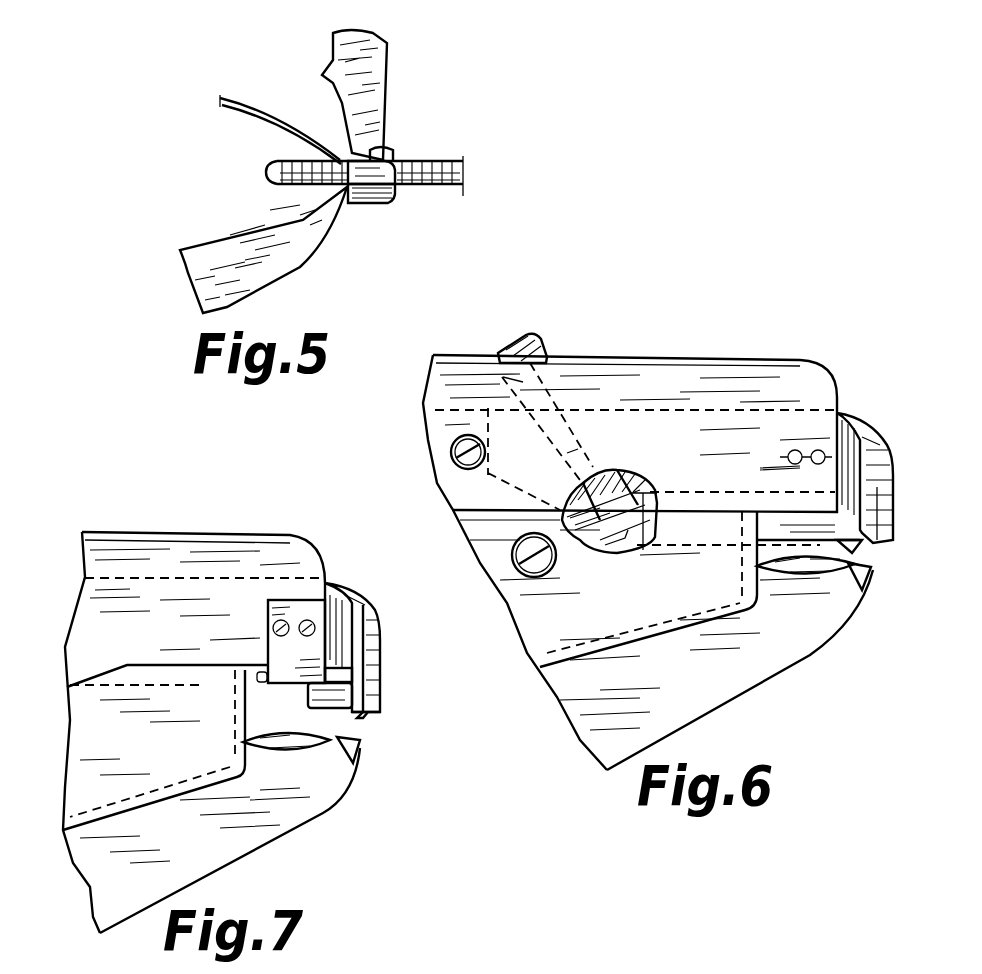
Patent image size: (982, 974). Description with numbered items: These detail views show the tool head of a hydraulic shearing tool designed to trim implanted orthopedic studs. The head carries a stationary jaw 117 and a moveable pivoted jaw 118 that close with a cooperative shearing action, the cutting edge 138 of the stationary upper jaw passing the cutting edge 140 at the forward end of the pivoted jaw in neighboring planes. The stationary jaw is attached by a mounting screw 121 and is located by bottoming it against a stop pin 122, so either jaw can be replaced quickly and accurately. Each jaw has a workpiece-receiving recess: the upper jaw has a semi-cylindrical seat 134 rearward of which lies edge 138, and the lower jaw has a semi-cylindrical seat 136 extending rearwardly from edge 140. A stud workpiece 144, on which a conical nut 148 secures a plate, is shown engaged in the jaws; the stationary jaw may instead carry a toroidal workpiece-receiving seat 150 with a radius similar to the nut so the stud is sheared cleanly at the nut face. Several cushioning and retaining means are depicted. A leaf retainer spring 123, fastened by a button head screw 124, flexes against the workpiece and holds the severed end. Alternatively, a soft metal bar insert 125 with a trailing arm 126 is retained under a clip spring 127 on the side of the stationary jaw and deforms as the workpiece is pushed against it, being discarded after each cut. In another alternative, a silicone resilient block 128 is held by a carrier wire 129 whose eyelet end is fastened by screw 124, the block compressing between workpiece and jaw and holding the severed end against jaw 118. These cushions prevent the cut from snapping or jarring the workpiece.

In FIG. 7, the stationary jaw 117 is at (367, 607).
In FIG. 6, the pivoted jaw 118 is at (648, 562).
In FIG. 7, the pivoted jaw 118 is at (300, 815).
In FIG. 6, the mounting screw 121 is at (540, 333).
In FIG. 6, the stop pin 122 is at (450, 450).
In FIG. 5, the retainer spring 123 is at (287, 133).
In FIG. 6, the button head screw 124 is at (630, 527).
In FIG. 7, the metal bar insert 125 is at (328, 697).
In FIG. 7, the trailing arm 126 is at (343, 668).
In FIG. 7, the clip spring 127 is at (280, 643).
In FIG. 6, the resilient block 128 is at (792, 520).
In FIG. 6, the carrier wire 129 is at (627, 473).
In FIG. 6, the semi-cylindrical seat 134 is at (853, 545).
In FIG. 7, the semi-cylindrical seat 134 is at (348, 714).
In FIG. 6, the semi-cylindrical seat 136 is at (790, 565).
In FIG. 7, the semi-cylindrical seat 136 is at (250, 740).
In FIG. 5, the cutting edge 138 is at (342, 153).
In FIG. 6, the cutting edge 138 is at (867, 528).
In FIG. 5, the cutting edge 140 is at (342, 190).
In FIG. 6, the cutting edge 140 is at (872, 592).
In FIG. 7, the cutting edge 140 is at (353, 757).
In FIG. 5, the stud workpiece 144 is at (445, 162).
In FIG. 5, the conical nut 148 is at (378, 180).
In FIG. 5, the workpiece-receiving seat 150 is at (377, 152).